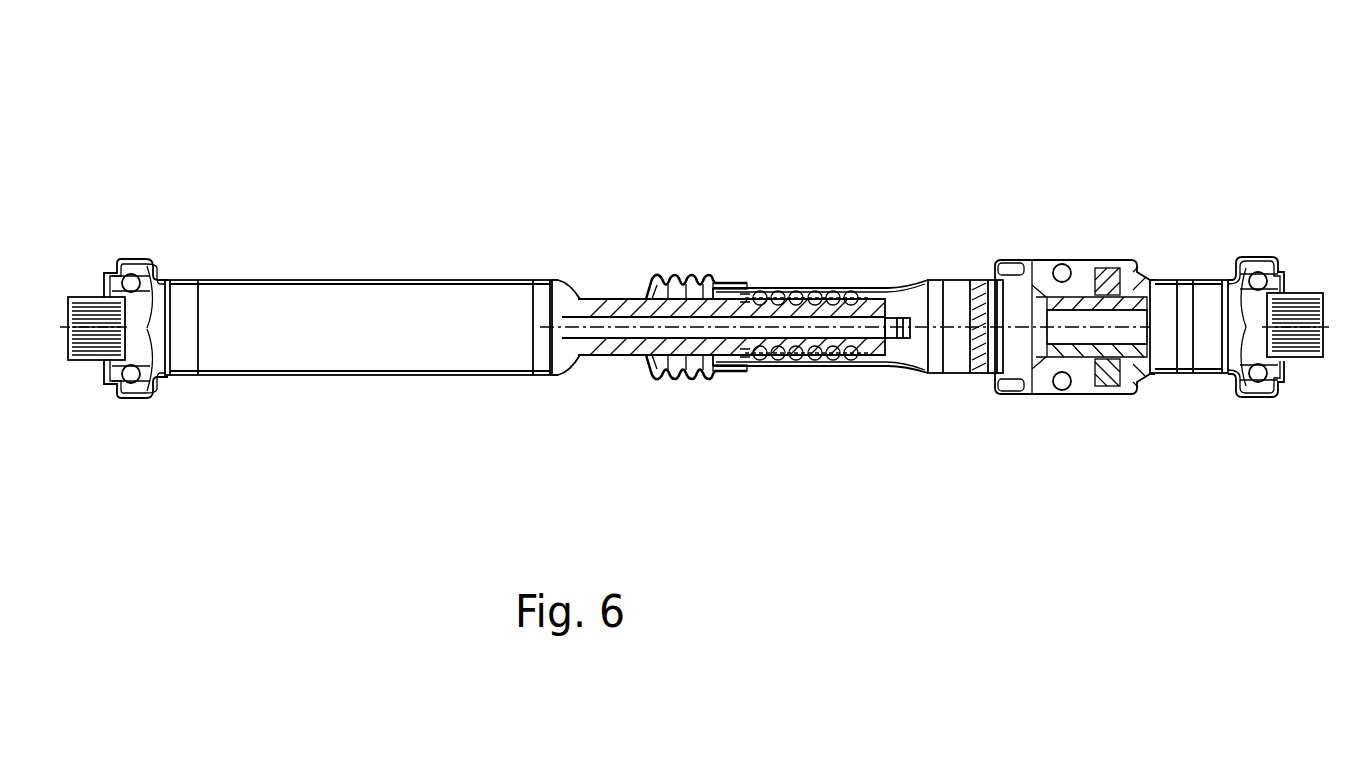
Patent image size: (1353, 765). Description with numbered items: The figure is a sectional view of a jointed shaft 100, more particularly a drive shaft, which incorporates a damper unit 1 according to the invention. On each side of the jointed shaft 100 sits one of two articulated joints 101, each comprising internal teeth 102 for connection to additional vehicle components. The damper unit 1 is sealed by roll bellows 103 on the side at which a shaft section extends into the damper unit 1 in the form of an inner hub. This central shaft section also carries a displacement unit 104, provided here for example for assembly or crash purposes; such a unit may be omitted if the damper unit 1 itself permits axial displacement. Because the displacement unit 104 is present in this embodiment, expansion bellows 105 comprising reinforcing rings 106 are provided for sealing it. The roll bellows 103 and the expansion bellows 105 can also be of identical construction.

The damper unit 1 is at (1087, 262).
The jointed shaft 100 is at (873, 432).
The articulated joint 101 is at (123, 272).
The internal teeth 102 is at (80, 292).
The roll bellows 103 is at (1003, 262).
The displacement unit 104 is at (780, 288).
The expansion bellows 105 is at (658, 277).
The reinforcing rings 106 is at (682, 281).